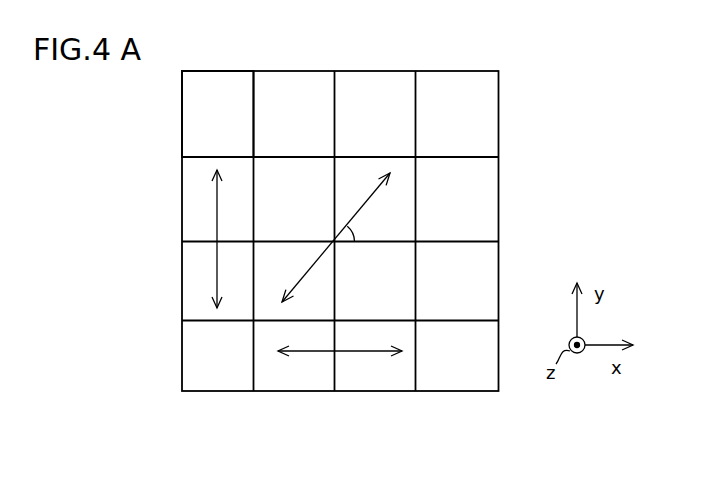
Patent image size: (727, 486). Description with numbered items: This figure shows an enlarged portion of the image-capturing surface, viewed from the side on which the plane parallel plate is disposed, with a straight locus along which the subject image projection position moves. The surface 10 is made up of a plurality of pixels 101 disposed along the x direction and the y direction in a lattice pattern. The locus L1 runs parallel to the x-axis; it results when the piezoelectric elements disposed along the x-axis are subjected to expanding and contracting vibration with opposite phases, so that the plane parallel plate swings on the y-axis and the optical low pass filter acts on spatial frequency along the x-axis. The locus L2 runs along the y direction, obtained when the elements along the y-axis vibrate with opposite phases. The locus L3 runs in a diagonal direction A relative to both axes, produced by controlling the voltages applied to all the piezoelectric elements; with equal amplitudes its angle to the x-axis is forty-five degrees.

The pixel array / sensor substrate 10 is at (479, 70).
The pixel 101 is at (202, 115).
The locus L1 is at (363, 352).
The locus L2 is at (215, 212).
The locus L3 is at (313, 263).
The diagonal direction A is at (395, 160).